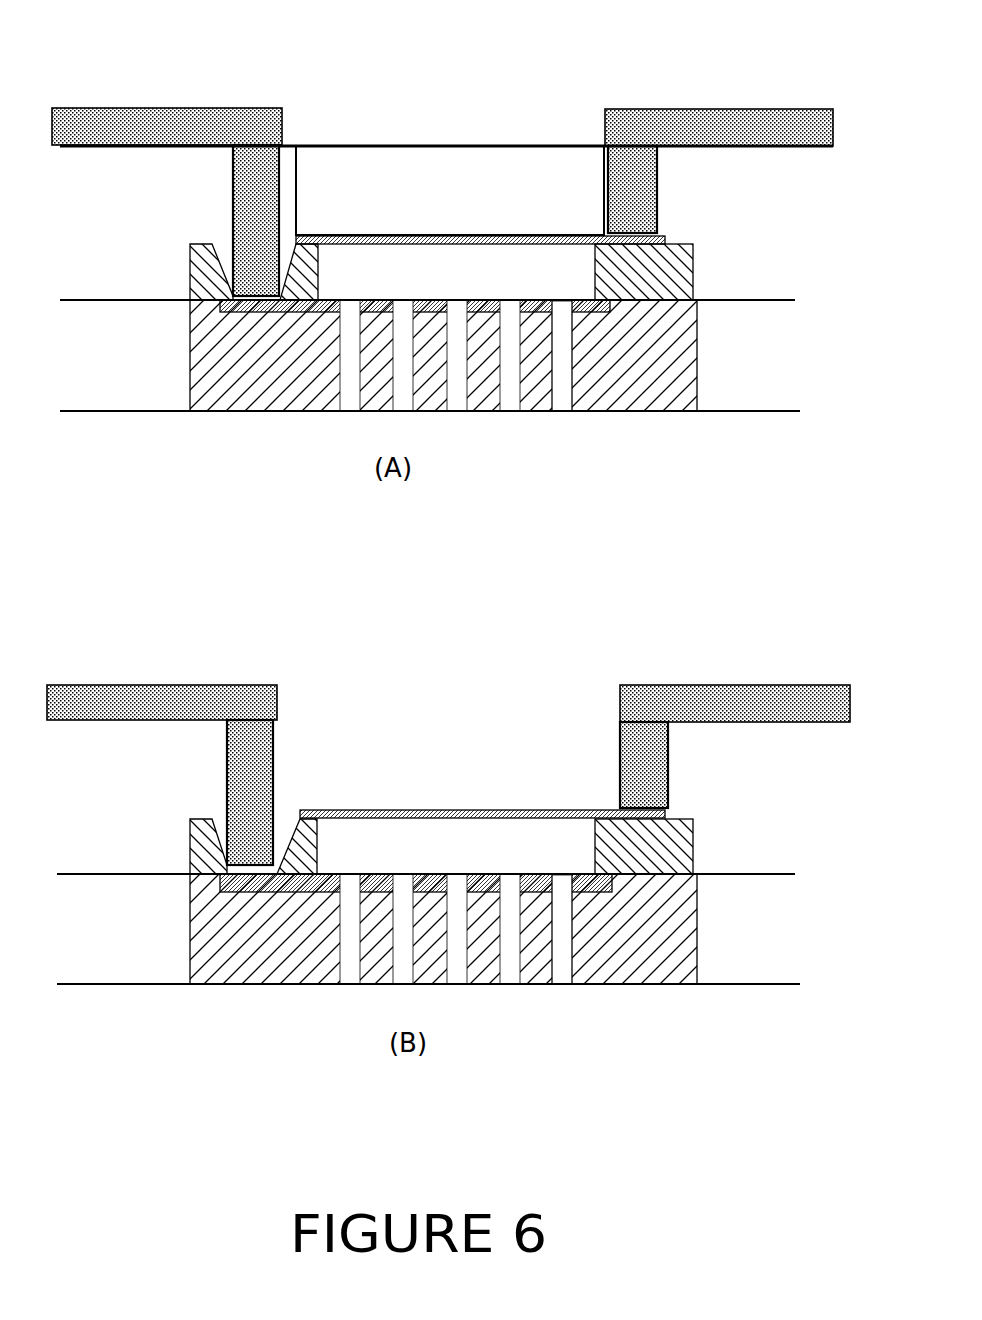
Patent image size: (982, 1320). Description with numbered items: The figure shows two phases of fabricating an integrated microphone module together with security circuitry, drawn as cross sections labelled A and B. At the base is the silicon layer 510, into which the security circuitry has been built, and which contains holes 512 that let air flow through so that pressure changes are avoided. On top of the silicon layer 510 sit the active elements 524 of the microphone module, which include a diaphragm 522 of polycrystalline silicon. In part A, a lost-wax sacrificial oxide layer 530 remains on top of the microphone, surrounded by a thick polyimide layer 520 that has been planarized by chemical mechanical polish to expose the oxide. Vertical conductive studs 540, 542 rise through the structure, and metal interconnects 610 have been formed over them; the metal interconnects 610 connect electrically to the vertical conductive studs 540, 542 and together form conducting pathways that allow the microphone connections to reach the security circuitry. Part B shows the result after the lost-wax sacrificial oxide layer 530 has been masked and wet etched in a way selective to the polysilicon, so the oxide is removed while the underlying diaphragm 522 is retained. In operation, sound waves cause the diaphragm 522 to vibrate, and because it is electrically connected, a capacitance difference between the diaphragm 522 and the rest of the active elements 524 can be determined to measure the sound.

The silicon layer 510 is at (428, 642).
The holes 512 is at (560, 393).
The polyimide layer 520 is at (758, 508).
The diaphragm 522 is at (503, 237).
The active elements 524 is at (198, 276).
The lost-wax sacrificial oxide layer 530 is at (450, 190).
The vertical conductive stud 540 is at (257, 165).
The vertical conductive stud 542 is at (637, 167).
The metal interconnects 610 is at (175, 118).